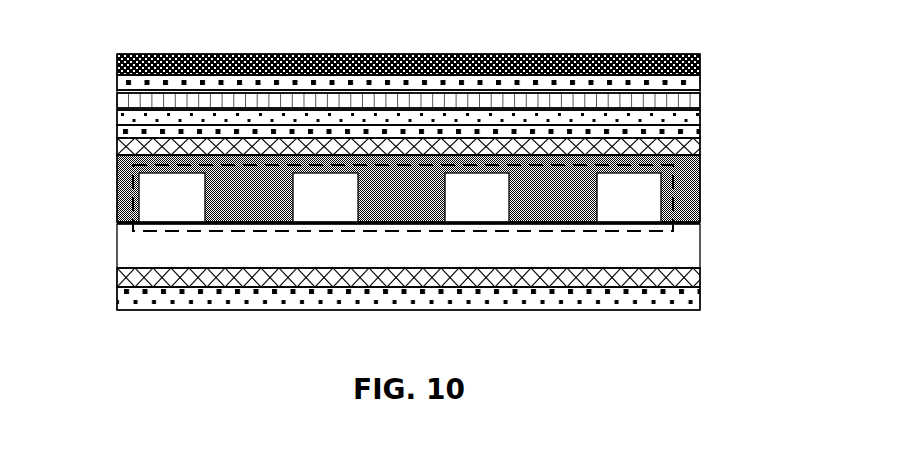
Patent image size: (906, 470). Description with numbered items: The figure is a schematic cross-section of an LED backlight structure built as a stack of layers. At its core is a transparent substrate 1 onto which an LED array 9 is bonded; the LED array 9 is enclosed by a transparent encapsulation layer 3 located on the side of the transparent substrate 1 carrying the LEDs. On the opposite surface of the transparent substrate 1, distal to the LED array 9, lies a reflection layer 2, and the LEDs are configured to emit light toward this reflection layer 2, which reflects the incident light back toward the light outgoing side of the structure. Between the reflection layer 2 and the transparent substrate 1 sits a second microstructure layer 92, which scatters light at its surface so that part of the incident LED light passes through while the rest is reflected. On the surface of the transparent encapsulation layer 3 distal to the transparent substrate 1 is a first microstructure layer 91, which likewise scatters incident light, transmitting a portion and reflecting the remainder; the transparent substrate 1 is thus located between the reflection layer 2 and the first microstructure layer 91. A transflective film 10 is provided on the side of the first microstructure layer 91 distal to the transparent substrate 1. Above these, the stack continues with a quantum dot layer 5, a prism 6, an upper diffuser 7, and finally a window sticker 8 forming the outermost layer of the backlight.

The transparent substrate 1 is at (700, 247).
The reflection layer 2 is at (700, 295).
The transparent encapsulation layer 3 is at (700, 190).
The quantum dot layer 5 is at (117, 118).
The prism 6 is at (700, 100).
The upper diffuser 7 is at (117, 82).
The window sticker 8 is at (412, 55).
The LED array 9 is at (133, 200).
The transflective film 10 is at (117, 137).
The first microstructure layer 91 is at (700, 147).
The second microstructure layer 92 is at (700, 277).